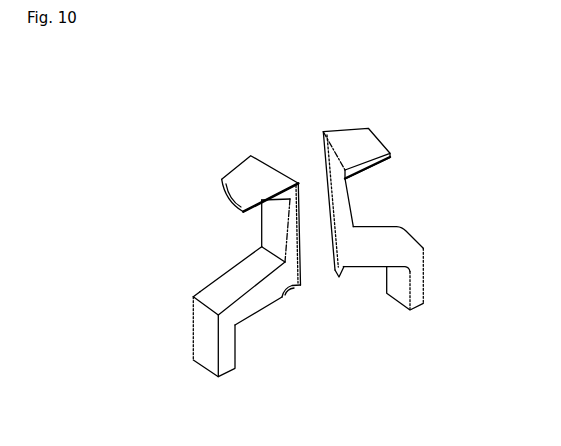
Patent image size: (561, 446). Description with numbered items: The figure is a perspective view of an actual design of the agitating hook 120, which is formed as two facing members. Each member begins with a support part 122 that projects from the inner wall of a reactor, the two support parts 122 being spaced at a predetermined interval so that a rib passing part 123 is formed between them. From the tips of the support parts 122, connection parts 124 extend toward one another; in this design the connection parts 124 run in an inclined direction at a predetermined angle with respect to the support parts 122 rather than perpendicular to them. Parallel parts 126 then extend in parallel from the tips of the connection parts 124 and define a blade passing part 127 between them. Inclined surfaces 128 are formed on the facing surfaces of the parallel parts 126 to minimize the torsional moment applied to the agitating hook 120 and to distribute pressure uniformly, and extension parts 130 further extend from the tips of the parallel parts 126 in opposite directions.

The agitating hook 120 is at (142, 139).
The support parts 122 is at (207, 350).
The rib passing part 123 is at (340, 332).
The connection parts 124 is at (243, 288).
The parallel parts 126 is at (270, 228).
The blade passing part 127 is at (315, 164).
The inclined surfaces 128 is at (266, 156).
The extension parts 130 is at (230, 185).